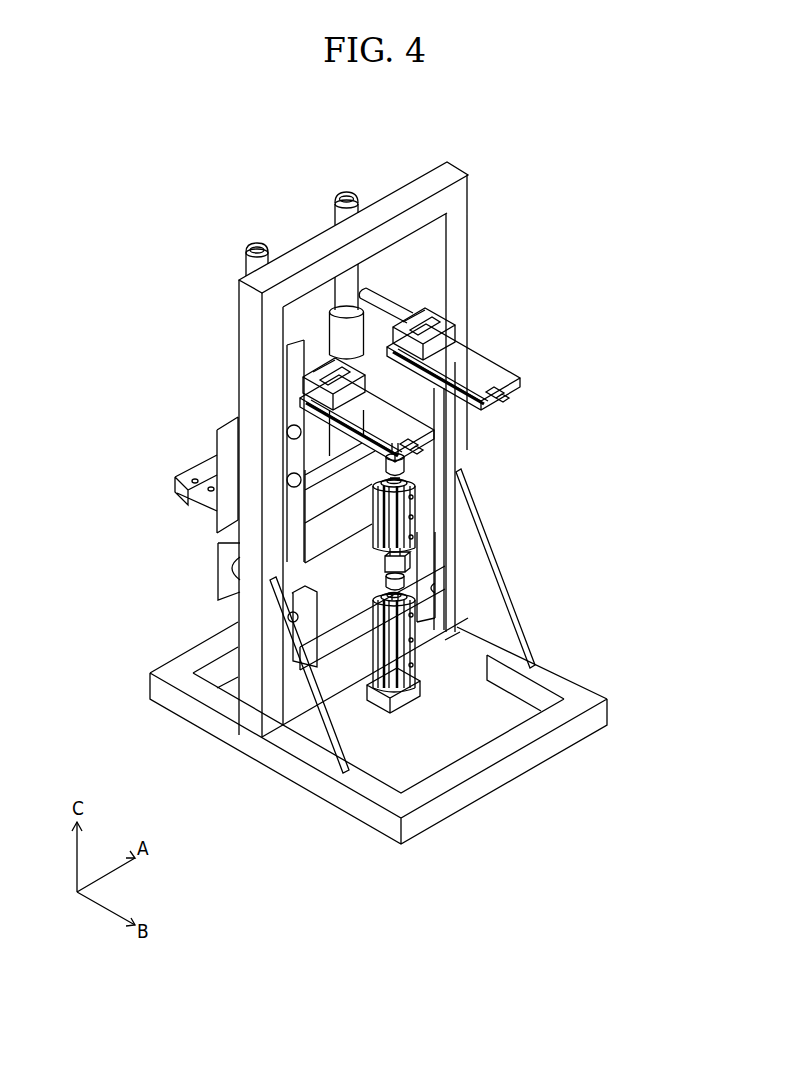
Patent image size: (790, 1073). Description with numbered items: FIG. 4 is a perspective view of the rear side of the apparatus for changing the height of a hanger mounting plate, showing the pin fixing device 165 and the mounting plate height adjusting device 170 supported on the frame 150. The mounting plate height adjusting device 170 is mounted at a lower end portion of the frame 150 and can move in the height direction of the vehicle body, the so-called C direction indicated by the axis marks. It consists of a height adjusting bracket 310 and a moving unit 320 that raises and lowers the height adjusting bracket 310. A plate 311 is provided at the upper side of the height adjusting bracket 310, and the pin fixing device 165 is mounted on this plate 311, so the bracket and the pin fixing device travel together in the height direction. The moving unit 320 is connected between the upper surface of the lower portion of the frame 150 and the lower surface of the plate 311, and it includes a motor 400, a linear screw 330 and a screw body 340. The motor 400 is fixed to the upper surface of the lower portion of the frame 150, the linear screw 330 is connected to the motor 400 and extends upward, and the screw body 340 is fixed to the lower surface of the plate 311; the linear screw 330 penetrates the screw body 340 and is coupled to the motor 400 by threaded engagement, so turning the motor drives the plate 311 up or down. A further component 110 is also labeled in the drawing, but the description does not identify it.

The frame 150 is at (468, 205).
The drive rod 110 is at (385, 312).
The pin fixing device 165 is at (526, 359).
The plate 311 is at (442, 397).
The height adjusting bracket 310 is at (223, 568).
The moving unit 320 is at (489, 578).
The screw body 340 is at (413, 507).
The linear screw 330 is at (402, 567).
The motor 400 is at (407, 652).
The mounting plate height adjusting device 170 is at (407, 634).